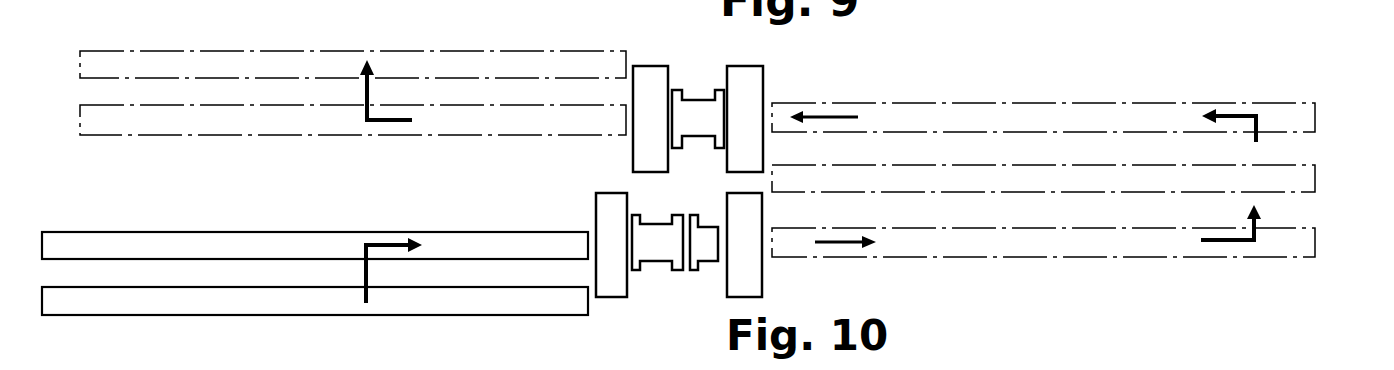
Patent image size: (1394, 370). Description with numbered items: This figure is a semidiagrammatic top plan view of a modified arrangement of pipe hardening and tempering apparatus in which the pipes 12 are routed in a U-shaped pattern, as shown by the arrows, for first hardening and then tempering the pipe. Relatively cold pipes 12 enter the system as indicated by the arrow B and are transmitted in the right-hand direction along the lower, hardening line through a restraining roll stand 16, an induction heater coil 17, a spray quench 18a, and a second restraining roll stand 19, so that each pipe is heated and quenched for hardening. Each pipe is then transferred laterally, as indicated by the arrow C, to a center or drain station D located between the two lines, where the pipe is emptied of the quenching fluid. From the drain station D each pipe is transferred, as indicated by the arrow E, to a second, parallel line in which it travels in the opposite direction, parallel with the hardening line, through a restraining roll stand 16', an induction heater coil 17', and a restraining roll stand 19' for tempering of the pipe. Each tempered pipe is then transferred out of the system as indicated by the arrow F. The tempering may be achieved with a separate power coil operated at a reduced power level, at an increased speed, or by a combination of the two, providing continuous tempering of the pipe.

The pipes 12 is at (462, 240).
The restraining roll stand 16 is at (599, 280).
The induction heater coil 17 is at (655, 282).
The spray quench 18a is at (707, 271).
The restraining roll stand 19 is at (790, 251).
The restraining roll stand 16' is at (787, 111).
The induction heater coil 17' is at (698, 94).
The restraining roll stand 19' is at (650, 91).
The arrow B is at (385, 243).
The arrow C is at (1240, 243).
The center or drain station D is at (1326, 176).
The arrow E is at (1236, 112).
The arrow F is at (365, 90).